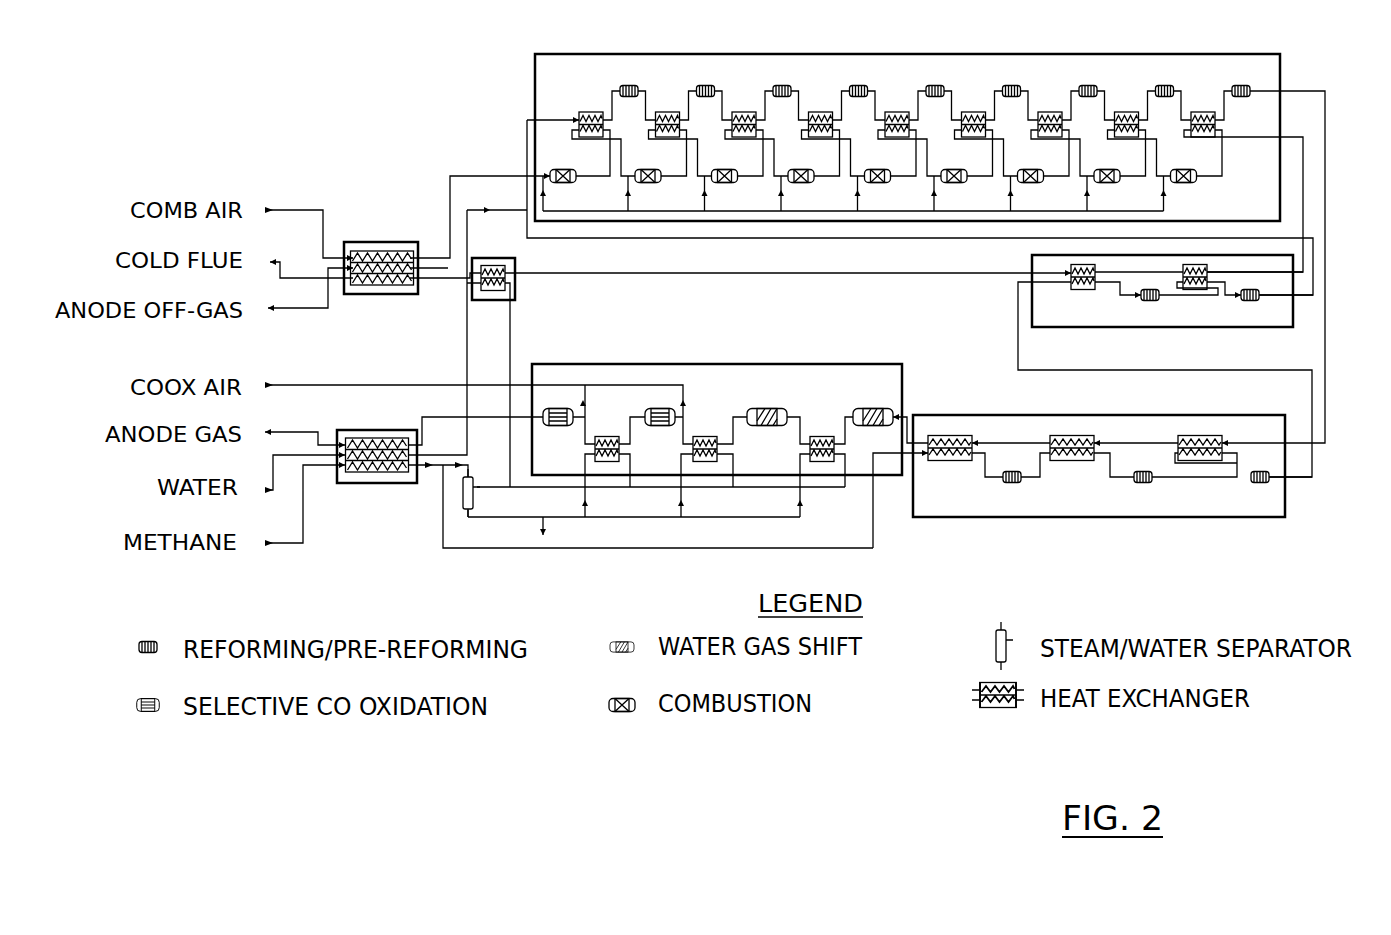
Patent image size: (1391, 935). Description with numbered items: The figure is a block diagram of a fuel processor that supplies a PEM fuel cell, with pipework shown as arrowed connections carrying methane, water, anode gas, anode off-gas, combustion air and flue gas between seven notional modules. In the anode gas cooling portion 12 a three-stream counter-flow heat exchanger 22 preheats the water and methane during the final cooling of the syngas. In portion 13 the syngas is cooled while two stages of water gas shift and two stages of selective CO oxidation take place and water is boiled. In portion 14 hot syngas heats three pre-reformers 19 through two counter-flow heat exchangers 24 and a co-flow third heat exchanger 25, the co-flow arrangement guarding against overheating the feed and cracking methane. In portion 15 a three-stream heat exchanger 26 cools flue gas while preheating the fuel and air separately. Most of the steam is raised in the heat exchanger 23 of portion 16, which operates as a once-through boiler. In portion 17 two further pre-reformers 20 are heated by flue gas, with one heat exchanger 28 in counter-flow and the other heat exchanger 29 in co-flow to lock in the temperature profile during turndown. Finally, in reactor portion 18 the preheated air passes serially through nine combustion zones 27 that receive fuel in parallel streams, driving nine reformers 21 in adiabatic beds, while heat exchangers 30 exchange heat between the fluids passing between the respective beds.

The anode gas cooling portion 12 is at (395, 485).
The syngas cooling, CO oxidation and water gas shift portion 13 is at (780, 362).
The syngas cooling and pre-reforming portion 14 is at (1000, 410).
The flue gas cooling and fuel/air pre-heat portion 15 is at (397, 242).
The flue gas cooling and water boiling portion 16 is at (518, 287).
The flue gas cooling and feed pre-reforming portion 17 is at (1030, 308).
The multi-stage combustion and reforming portion 18 is at (533, 105).
The pre-reformers 19 is at (1248, 478).
The pre-reformers 20 is at (1248, 300).
The reformers 21 is at (1233, 84).
The three-stream counter-flow heat exchanger 22 is at (382, 438).
The heat exchanger 23 is at (473, 290).
The heat exchangers 24 is at (1068, 435).
The third heat exchanger 25 is at (1205, 435).
The three-stream heat exchanger 26 is at (362, 282).
The combustion zones 27 is at (1197, 181).
The heat exchanger 28 is at (1063, 280).
The heat exchanger 29 is at (1263, 299).
The heat exchangers 30 is at (1217, 112).